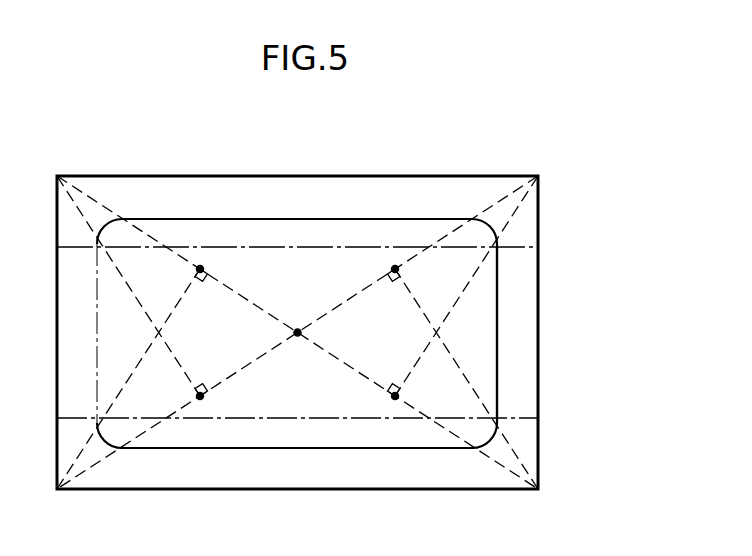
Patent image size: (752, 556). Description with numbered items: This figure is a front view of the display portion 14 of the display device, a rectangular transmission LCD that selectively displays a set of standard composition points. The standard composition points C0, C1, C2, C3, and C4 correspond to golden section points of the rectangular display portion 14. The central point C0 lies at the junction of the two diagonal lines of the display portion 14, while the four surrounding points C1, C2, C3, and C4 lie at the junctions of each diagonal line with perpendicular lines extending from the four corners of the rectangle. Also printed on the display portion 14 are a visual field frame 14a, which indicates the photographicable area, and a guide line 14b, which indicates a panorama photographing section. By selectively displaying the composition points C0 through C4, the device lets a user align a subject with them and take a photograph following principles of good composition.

The display portion 14 is at (556, 156).
The visual field frame 14a is at (497, 340).
The guide line 14b is at (511, 250).
The standard composition point C0 is at (296, 318).
The standard composition point C1 is at (215, 267).
The standard composition point C2 is at (206, 377).
The standard composition point C3 is at (380, 267).
The standard composition point C4 is at (387, 382).